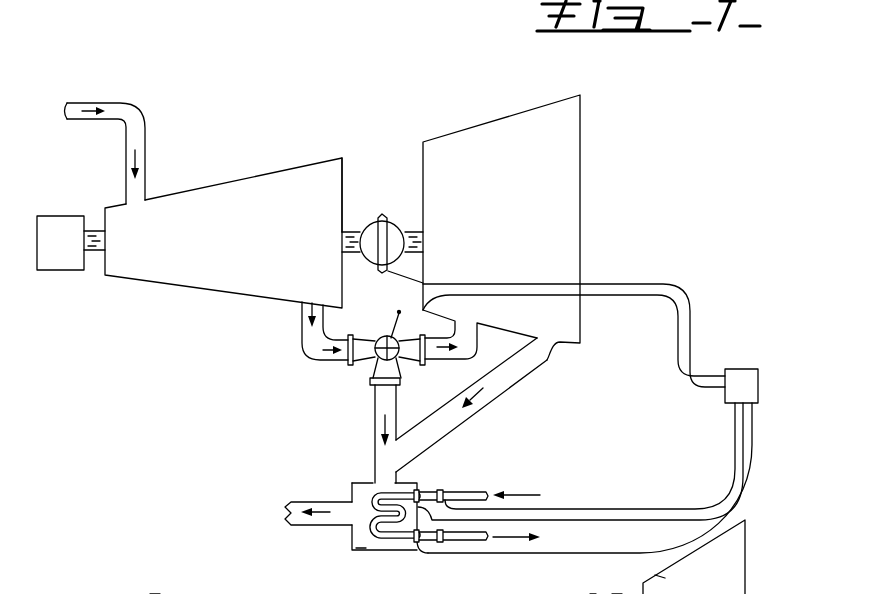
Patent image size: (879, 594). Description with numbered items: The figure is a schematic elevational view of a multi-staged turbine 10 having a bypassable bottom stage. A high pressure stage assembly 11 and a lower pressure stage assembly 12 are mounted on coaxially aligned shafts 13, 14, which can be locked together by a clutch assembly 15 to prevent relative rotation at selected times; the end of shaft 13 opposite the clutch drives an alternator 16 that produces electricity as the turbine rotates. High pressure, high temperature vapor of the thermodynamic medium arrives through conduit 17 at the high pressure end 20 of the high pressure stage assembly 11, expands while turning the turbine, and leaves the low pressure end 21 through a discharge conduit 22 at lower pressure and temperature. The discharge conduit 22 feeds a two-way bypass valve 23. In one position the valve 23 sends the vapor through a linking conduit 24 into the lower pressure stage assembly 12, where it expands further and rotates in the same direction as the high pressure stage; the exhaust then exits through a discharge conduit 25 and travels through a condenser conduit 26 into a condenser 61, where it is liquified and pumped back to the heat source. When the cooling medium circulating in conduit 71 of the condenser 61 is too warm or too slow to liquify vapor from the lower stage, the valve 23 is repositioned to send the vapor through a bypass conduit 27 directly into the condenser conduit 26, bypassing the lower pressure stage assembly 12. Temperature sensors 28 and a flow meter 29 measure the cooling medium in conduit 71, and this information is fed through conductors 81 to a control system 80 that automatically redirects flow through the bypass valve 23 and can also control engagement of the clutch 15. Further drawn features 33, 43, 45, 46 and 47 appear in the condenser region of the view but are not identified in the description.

The multi-staged turbine 10 is at (262, 55).
The high pressure stage assembly 11 is at (230, 181).
The lower pressure stage assembly 12 is at (465, 130).
The shaft 13 is at (350, 232).
The shaft 14 is at (417, 230).
The clutch assembly 15 is at (380, 217).
The alternator 16 is at (46, 215).
The conduit 17 is at (80, 103).
The high pressure end 20 is at (103, 216).
The low pressure end 21 is at (342, 160).
The discharge conduit 22 is at (300, 336).
The two-way bypass valve 23 is at (397, 311).
The linking conduit 24 is at (473, 352).
The discharge conduit 25 is at (533, 368).
The condenser conduit 26 is at (373, 476).
The bypass conduit 27 is at (372, 407).
The temperature sensors 28 is at (408, 494).
The flow meter 29 is at (438, 493).
The exhaust line 33 is at (662, 576).
The exhaust passage 43 is at (617, 585).
The exhaust passage 45 is at (593, 593).
The exhaust duct 46 is at (747, 591).
The outlet line 47 is at (155, 593).
The condenser 61 is at (360, 538).
The conduit 71 is at (473, 493).
The control system 80 is at (750, 369).
The conductors 81 is at (735, 422).